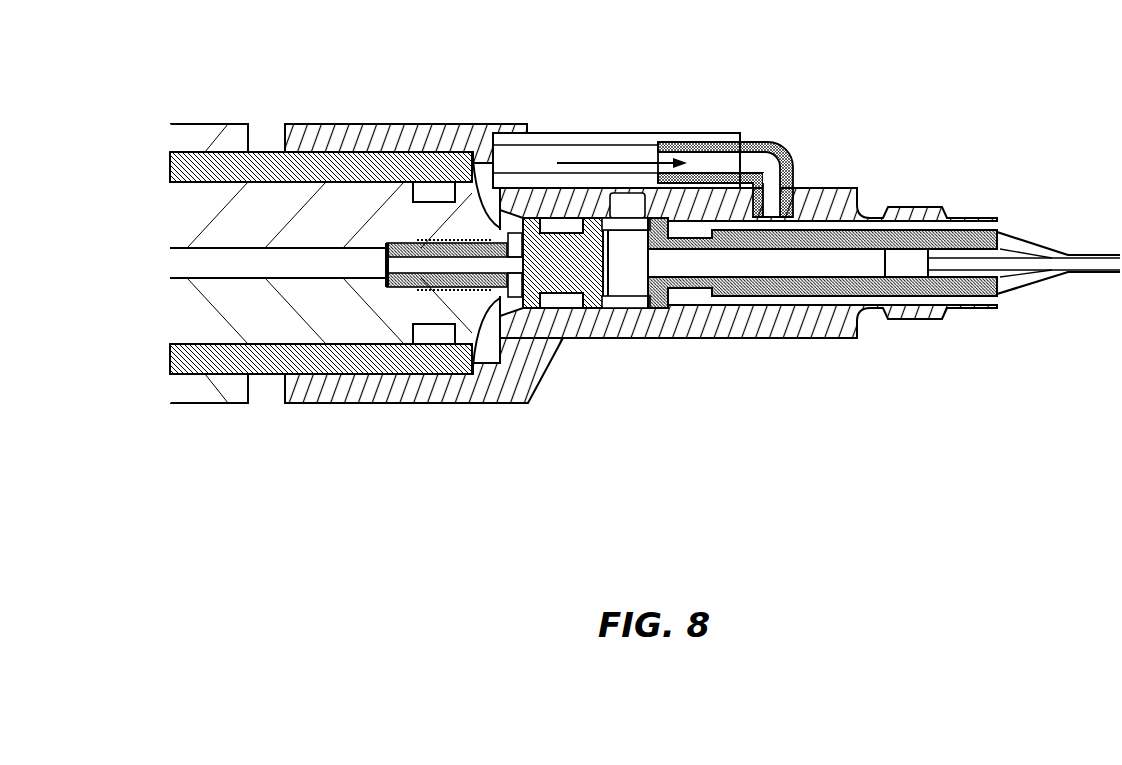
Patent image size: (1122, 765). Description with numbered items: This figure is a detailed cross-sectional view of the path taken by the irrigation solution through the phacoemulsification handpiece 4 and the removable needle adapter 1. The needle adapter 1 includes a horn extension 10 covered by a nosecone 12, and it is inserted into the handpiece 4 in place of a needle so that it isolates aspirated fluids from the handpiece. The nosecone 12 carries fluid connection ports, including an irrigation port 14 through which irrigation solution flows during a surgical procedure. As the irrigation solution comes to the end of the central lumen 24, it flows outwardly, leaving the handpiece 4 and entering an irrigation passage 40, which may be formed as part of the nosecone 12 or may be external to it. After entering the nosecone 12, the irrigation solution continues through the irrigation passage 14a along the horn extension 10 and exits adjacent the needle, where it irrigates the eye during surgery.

The needle adapter 1 is at (785, 418).
The phacoemulsification handpiece 4 is at (260, 168).
The horn extension 10 is at (582, 273).
The nosecone 12 is at (420, 137).
The irrigation port 14 is at (809, 179).
The irrigation passage 14a is at (892, 228).
The central lumen 24 is at (278, 262).
The irrigation passage 40 is at (623, 146).